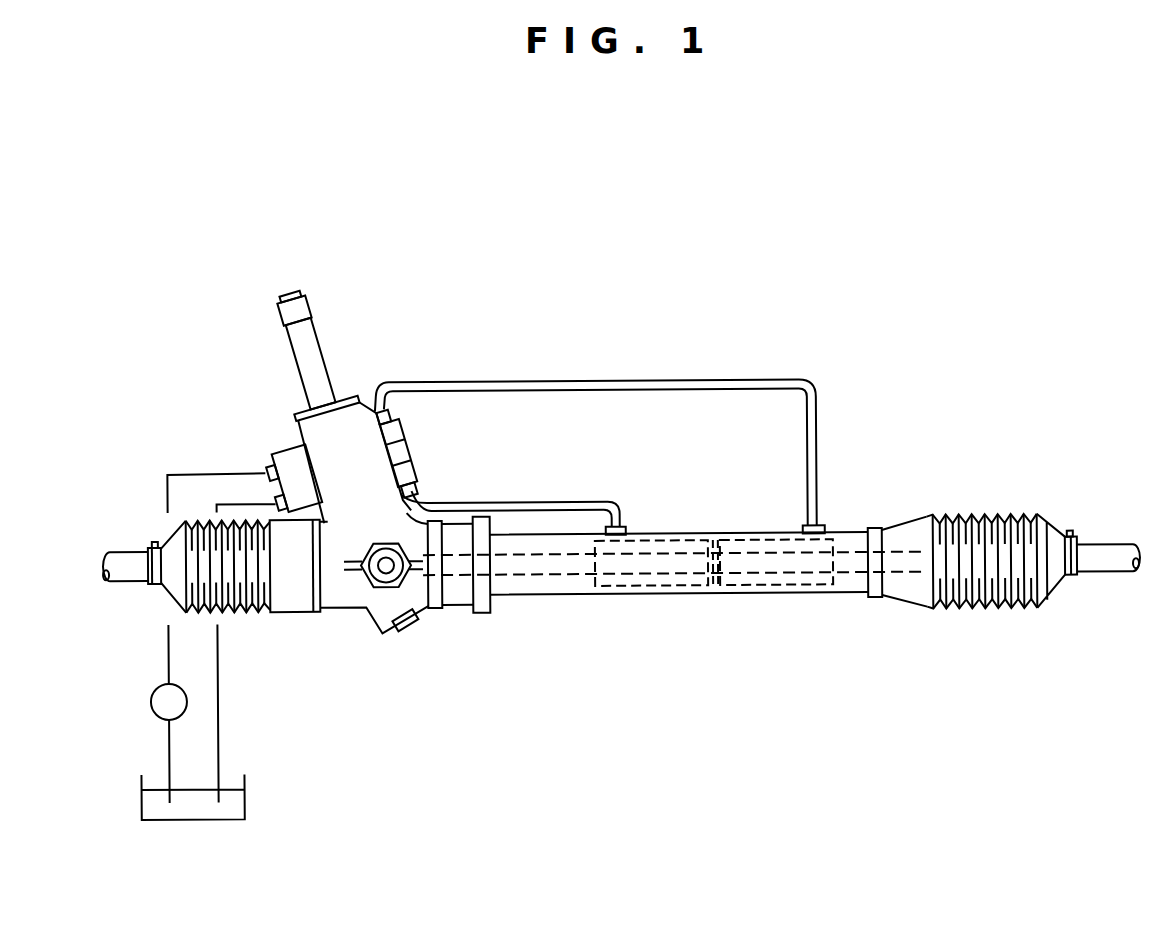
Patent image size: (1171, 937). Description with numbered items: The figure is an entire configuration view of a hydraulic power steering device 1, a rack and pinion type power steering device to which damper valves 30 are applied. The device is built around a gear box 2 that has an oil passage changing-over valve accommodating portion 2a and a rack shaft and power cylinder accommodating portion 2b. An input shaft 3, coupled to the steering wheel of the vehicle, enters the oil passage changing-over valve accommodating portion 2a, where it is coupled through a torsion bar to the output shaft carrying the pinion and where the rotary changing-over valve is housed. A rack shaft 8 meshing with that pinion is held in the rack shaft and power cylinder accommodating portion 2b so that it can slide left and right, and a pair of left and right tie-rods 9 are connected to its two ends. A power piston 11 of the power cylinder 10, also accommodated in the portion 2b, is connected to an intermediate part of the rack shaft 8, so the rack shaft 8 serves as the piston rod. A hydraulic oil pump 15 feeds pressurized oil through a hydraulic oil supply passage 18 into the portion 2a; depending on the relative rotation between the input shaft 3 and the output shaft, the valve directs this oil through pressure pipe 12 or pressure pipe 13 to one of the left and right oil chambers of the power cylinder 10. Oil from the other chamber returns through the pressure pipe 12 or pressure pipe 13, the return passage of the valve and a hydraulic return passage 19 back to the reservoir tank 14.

The hydraulic power steering device 1 is at (895, 355).
The gear box 2 is at (353, 620).
The oil passage changing-over valve accommodating portion 2a is at (331, 452).
The rack shaft and power cylinder accommodating portion 2b is at (527, 594).
The input shaft 3 is at (322, 336).
The rack shaft 8 is at (578, 568).
The tie-rods 9 is at (117, 550).
The power cylinder 10 is at (765, 586).
The power piston 11 is at (718, 534).
The pressure pipe 12 is at (543, 502).
The pressure pipe 13 is at (591, 381).
The reservoir tank 14 is at (198, 819).
The hydraulic oil pump 15 is at (150, 697).
The hydraulic oil supply passage 18 is at (197, 474).
The hydraulic return passage 19 is at (218, 665).
The damper valves 30 is at (418, 470).